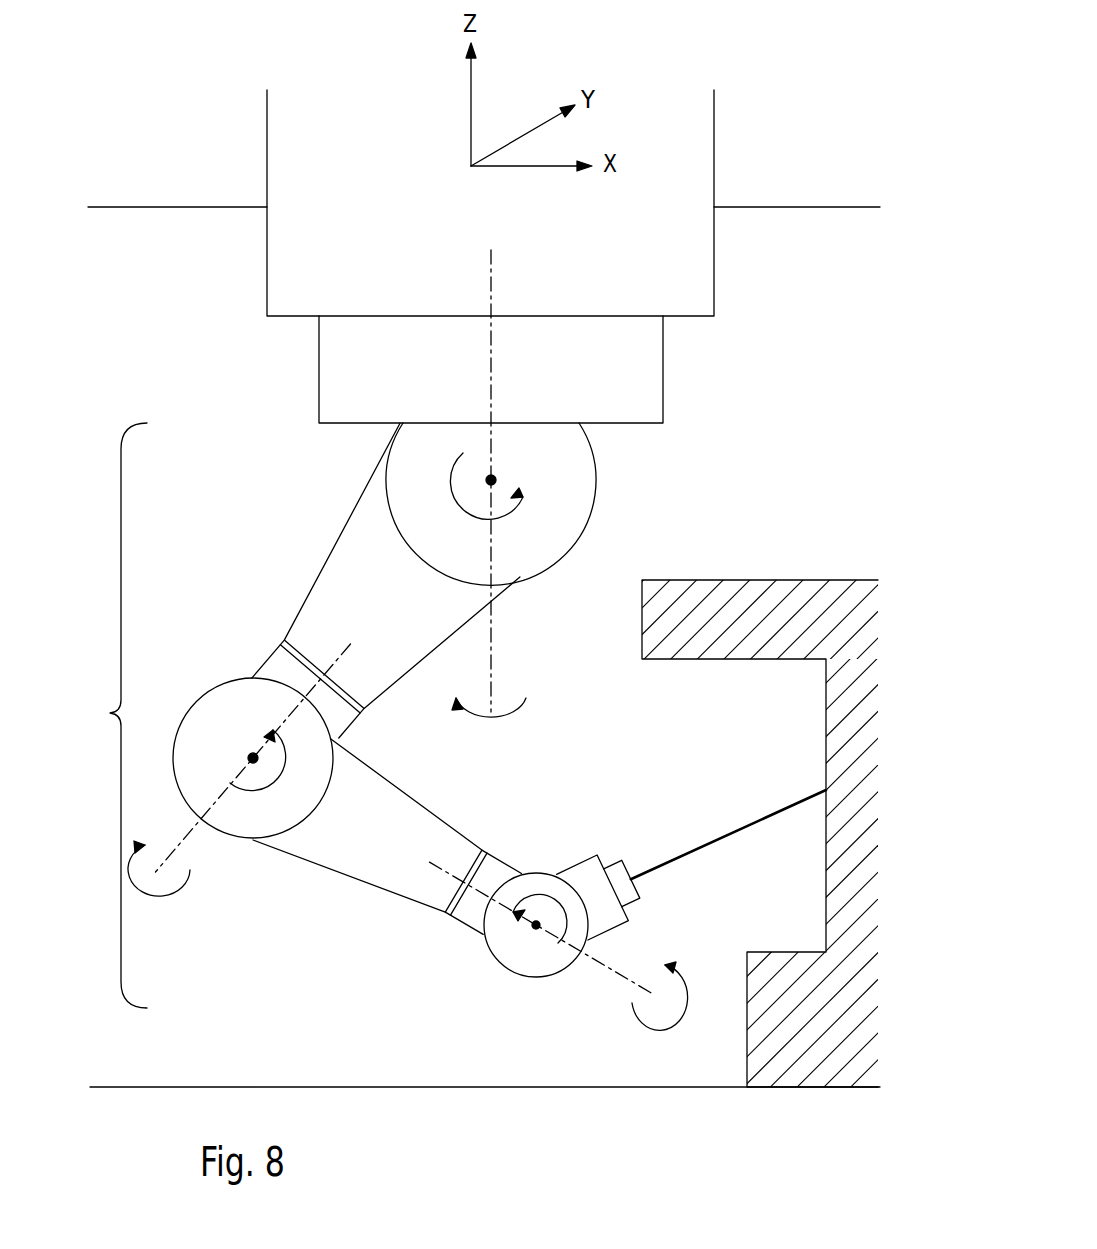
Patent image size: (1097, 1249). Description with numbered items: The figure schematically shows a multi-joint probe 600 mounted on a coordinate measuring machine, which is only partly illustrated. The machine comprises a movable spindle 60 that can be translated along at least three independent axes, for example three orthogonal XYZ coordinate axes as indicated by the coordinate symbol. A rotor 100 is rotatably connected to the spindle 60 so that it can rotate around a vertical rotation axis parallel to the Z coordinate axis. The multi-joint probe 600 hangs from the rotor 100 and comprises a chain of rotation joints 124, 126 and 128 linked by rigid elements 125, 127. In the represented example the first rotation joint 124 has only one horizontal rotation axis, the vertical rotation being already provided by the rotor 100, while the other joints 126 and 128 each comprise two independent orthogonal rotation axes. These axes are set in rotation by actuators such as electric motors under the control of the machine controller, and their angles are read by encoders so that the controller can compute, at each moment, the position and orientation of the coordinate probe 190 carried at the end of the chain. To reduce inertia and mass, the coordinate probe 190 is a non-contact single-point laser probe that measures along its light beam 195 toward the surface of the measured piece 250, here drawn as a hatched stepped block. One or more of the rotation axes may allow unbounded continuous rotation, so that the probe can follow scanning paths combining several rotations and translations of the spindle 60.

The movable spindle 60 is at (678, 263).
The rotor 100 is at (615, 370).
The first rotation joint 124 is at (565, 520).
The rigid element 125 is at (378, 568).
The rotation joint 126 is at (233, 717).
The rigid element 127 is at (358, 848).
The rotation joint 128 is at (502, 942).
The coordinate probe 190 is at (618, 873).
The light beam 195 is at (764, 813).
The measured piece 250 is at (783, 612).
The multi-joint probe 600 is at (447, 728).